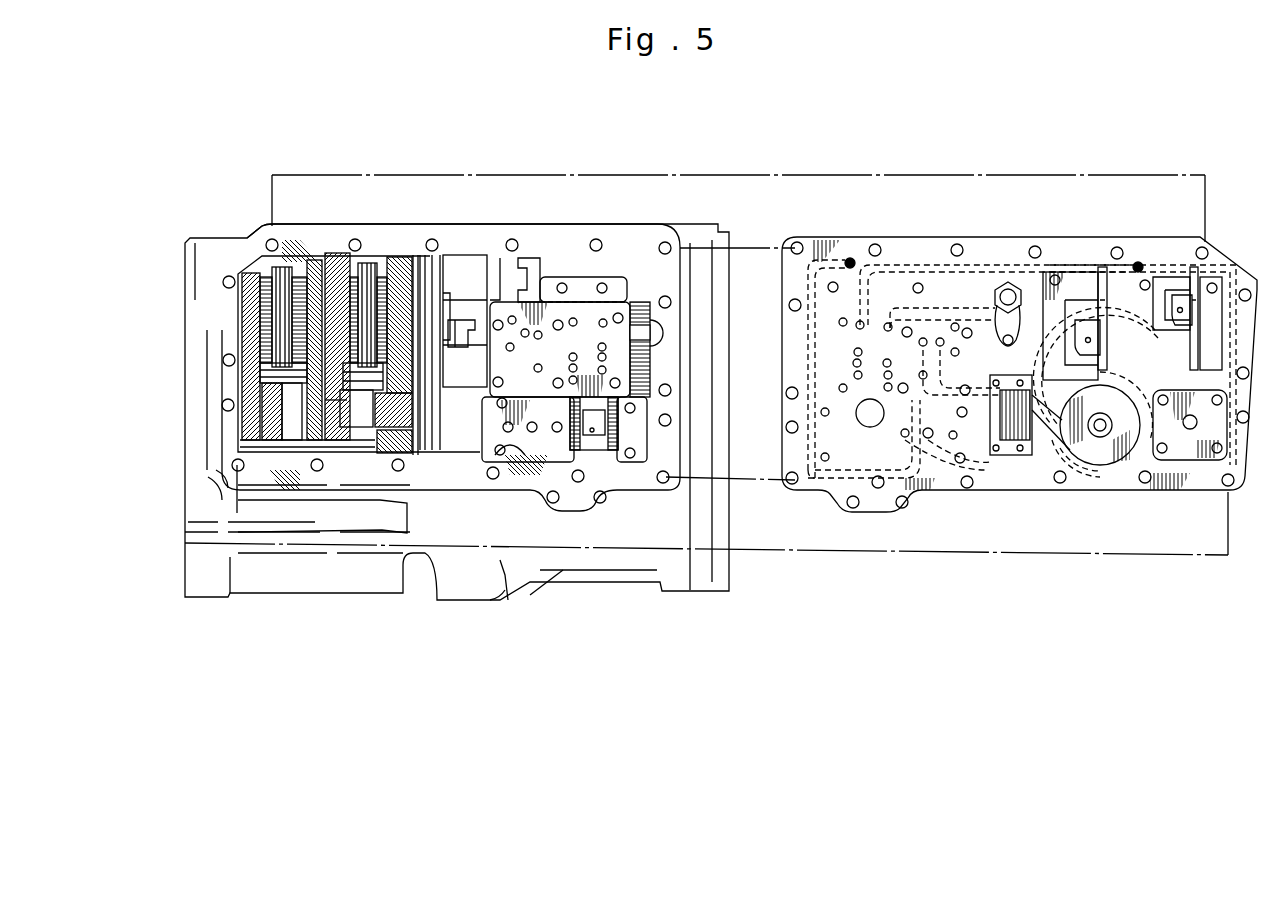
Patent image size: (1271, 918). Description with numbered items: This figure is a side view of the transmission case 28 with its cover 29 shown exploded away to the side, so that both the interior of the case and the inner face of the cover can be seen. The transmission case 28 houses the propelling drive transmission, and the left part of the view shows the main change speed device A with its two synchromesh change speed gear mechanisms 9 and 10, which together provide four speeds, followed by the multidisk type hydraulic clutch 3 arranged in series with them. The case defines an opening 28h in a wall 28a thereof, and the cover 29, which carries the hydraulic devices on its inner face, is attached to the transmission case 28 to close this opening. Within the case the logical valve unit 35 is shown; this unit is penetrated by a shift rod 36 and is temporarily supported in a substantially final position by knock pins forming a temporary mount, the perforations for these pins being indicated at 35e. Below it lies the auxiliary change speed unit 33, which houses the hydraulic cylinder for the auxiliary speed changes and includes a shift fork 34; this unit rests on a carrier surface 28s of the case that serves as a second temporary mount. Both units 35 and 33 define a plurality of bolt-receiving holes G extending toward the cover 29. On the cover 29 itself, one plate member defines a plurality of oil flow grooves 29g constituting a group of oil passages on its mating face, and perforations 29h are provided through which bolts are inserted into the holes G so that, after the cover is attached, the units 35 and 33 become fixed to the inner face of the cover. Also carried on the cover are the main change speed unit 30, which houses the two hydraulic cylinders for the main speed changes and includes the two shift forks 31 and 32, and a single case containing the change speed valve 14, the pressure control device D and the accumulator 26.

The transmission case 28 is at (232, 238).
The synchromesh change speed gear mechanism 10 is at (270, 270).
The synchromesh change speed gear mechanism 9 is at (372, 268).
The multidisk type hydraulic clutch 3 is at (462, 265).
The shift rod 36 is at (488, 328).
The logical valve unit 35 is at (498, 360).
The oil passage of valve plate 35e is at (562, 287).
The bolt-receiving holes G is at (618, 315).
The auxiliary change speed unit 33 is at (480, 448).
The shift fork 34 is at (598, 447).
The opening 28h is at (452, 445).
The main change speed device A is at (341, 437).
The carrier surface 28s is at (503, 460).
The wall 28a is at (503, 563).
The cover 29 is at (980, 237).
The oil flow grooves 29g is at (952, 310).
The perforations 29h is at (968, 328).
The main change speed unit 30 is at (1075, 275).
The shift fork 31 is at (1103, 268).
The shift fork 32 is at (1188, 333).
The pressure control device D is at (1033, 447).
The change speed valve 14 is at (1115, 462).
The accumulator 26 is at (1180, 455).